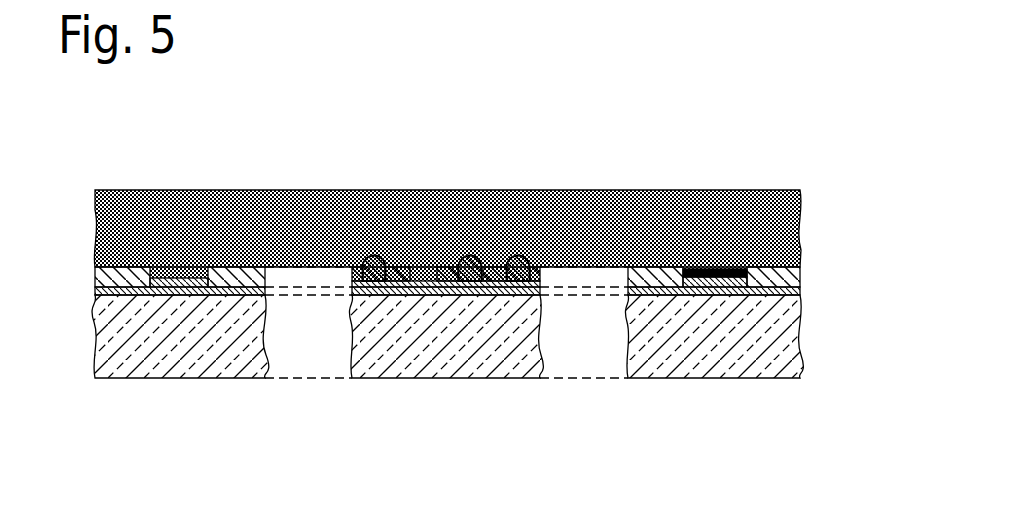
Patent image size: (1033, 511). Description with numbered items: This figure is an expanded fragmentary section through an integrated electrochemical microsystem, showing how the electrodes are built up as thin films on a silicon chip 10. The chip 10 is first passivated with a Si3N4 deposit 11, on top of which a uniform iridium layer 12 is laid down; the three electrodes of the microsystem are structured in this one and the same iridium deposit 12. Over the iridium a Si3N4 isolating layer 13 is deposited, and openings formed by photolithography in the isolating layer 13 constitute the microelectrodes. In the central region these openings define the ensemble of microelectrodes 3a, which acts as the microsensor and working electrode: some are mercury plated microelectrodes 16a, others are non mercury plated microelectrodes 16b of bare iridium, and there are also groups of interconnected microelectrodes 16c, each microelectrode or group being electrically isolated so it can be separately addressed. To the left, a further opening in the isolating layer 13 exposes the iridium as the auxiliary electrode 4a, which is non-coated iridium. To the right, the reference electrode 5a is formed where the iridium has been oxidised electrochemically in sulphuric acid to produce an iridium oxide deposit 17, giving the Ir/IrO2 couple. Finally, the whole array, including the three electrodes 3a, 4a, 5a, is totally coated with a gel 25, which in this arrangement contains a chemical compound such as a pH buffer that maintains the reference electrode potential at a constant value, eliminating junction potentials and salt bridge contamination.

The silicon chip 10 is at (768, 343).
The Si3N4 deposit 11 is at (790, 291).
The iridium layer 12 is at (470, 282).
The Si3N4 isolating layer 13 is at (786, 279).
The gel 25 is at (780, 232).
The auxiliary electrode 4a is at (179, 255).
The mercury plated microelectrodes 16a is at (370, 240).
The non mercury plated microelectrodes 16b is at (424, 256).
The groups of interconnected microelectrodes 16c is at (479, 228).
The ensemble of microelectrodes 3a is at (458, 218).
The iridium oxide deposit 17 is at (700, 268).
The reference electrode 5a is at (722, 250).